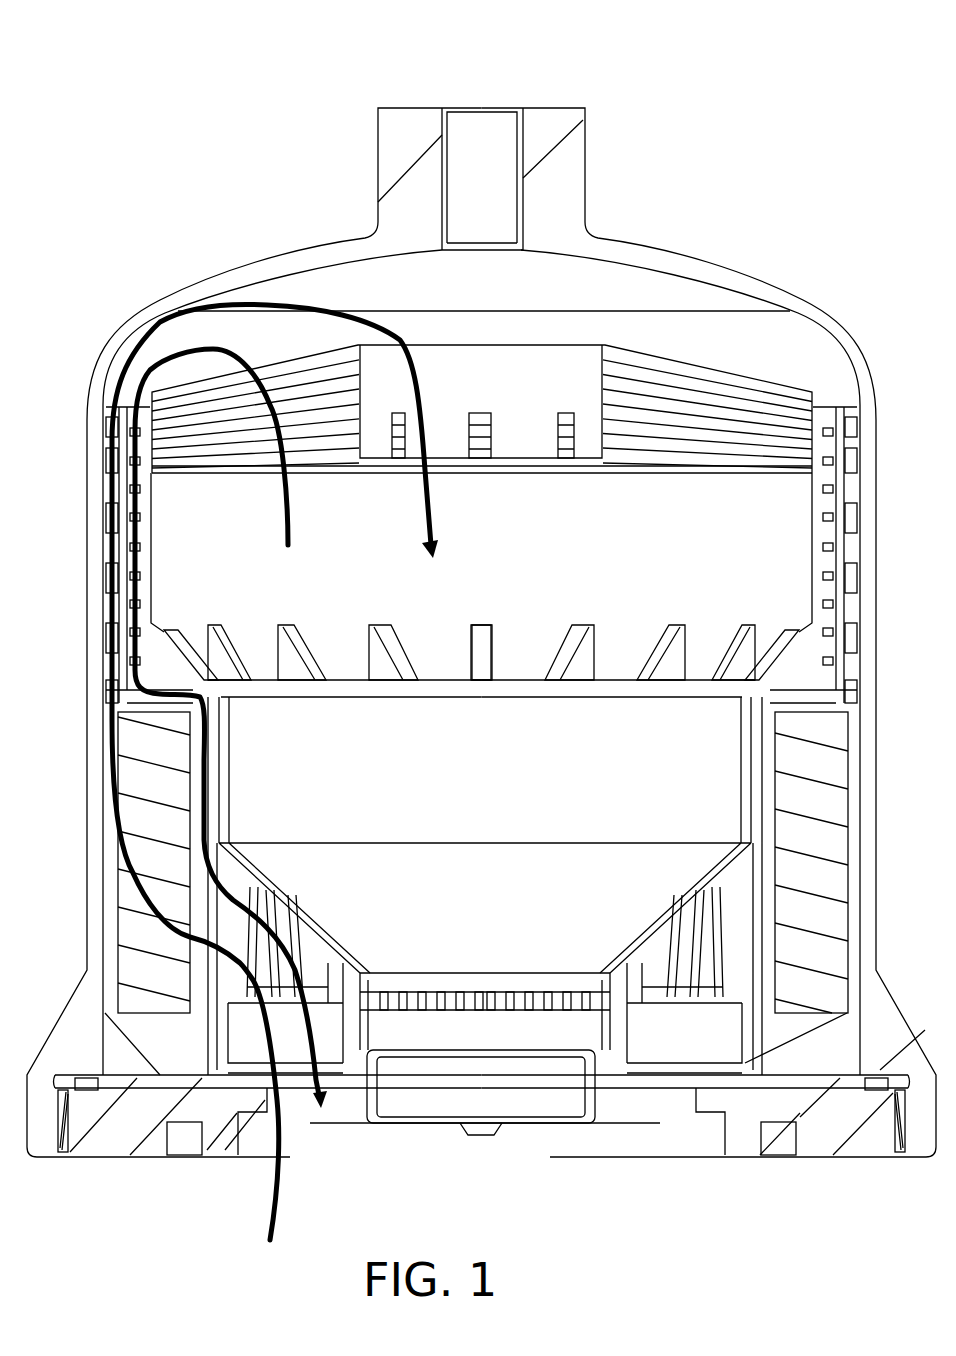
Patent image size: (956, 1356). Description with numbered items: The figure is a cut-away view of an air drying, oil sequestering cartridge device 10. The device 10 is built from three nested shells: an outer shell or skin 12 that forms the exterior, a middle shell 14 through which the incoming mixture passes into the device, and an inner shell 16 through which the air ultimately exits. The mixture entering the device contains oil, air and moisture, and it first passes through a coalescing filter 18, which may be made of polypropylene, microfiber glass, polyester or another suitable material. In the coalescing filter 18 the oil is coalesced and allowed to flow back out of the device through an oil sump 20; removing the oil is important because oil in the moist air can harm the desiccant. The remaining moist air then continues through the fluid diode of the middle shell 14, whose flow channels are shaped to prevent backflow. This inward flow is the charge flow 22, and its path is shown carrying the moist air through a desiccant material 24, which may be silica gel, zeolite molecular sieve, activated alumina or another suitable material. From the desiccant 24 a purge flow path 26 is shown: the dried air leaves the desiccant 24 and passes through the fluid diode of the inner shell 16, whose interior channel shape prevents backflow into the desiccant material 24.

The air drying, oil sequestering cartridge device 10 is at (300, 63).
The outer shell 12 is at (172, 287).
The middle shell 14 is at (852, 375).
The inner shell 16 is at (805, 388).
The coalescing filter 18 is at (142, 957).
The oil sump 20 is at (820, 1042).
The charge flow 22 is at (408, 383).
The desiccant material 24 is at (614, 531).
The purge flow path 26 is at (293, 522).